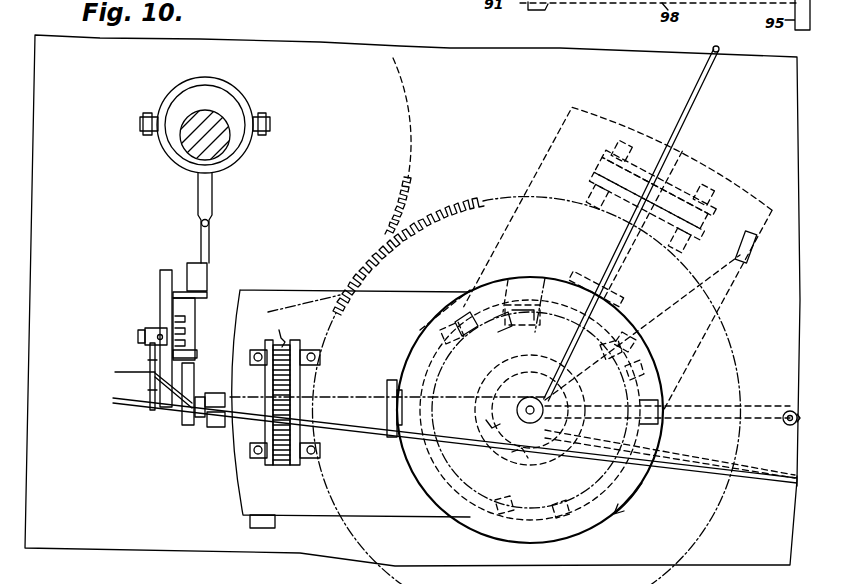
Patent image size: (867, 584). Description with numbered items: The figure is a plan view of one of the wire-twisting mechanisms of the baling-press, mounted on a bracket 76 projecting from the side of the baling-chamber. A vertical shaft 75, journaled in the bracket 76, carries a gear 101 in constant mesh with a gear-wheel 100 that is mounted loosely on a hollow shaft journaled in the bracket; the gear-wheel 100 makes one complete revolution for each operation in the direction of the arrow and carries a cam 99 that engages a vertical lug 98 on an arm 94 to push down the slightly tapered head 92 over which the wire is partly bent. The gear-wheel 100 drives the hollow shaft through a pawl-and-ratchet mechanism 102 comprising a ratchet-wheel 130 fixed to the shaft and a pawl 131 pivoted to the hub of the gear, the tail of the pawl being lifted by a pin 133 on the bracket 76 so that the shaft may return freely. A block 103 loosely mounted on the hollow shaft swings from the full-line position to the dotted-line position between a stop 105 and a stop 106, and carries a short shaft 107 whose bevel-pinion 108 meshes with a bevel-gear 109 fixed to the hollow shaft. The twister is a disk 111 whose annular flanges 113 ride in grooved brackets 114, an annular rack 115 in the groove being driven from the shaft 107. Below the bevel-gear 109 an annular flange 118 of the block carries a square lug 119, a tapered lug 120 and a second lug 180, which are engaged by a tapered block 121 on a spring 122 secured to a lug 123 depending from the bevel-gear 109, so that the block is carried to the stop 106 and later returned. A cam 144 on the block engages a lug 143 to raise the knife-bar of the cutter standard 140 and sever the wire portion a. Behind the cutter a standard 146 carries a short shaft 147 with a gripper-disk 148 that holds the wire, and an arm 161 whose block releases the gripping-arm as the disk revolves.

The bracket 76 is at (412, 300).
The vertical shaft 75 is at (178, 158).
The gripper-disk 148 is at (160, 272).
The short shaft 147 is at (195, 336).
The standard 146 is at (197, 352).
The arm 161 is at (148, 330).
The projecting lug 143 is at (222, 386).
The standard 140 is at (186, 420).
The cam 144 is at (212, 430).
The brackets 114 is at (265, 425).
The cam 99 is at (622, 453).
The short shaft 107 is at (352, 382).
The stop 105 is at (262, 528).
The bevel-pinion 108 is at (390, 380).
The annular flanges 113 is at (267, 358).
The disk 111 is at (288, 460).
The annular rack 115 is at (283, 340).
The gear-wheel 100 is at (484, 211).
The gear 101 is at (392, 235).
The block 103 is at (512, 410).
The pawl-and-ratchet mechanism 102 is at (490, 412).
The pawl 131 is at (492, 400).
The tapered head 92 is at (542, 406).
The pin 133 is at (485, 422).
The ratchet-wheel 130 is at (522, 456).
The lug 119 is at (460, 300).
The tapered block 121 is at (506, 293).
The spring 122 is at (540, 293).
The lug 123 is at (518, 325).
The second lug 180 is at (462, 342).
The lug 120 is at (616, 340).
The annular flange 118 is at (636, 376).
The vertical lug 98 is at (640, 408).
The arm 94 is at (716, 418).
The stop 106 is at (748, 260).
The wire portion a is at (705, 84).
The bevel-gear 109 is at (606, 522).